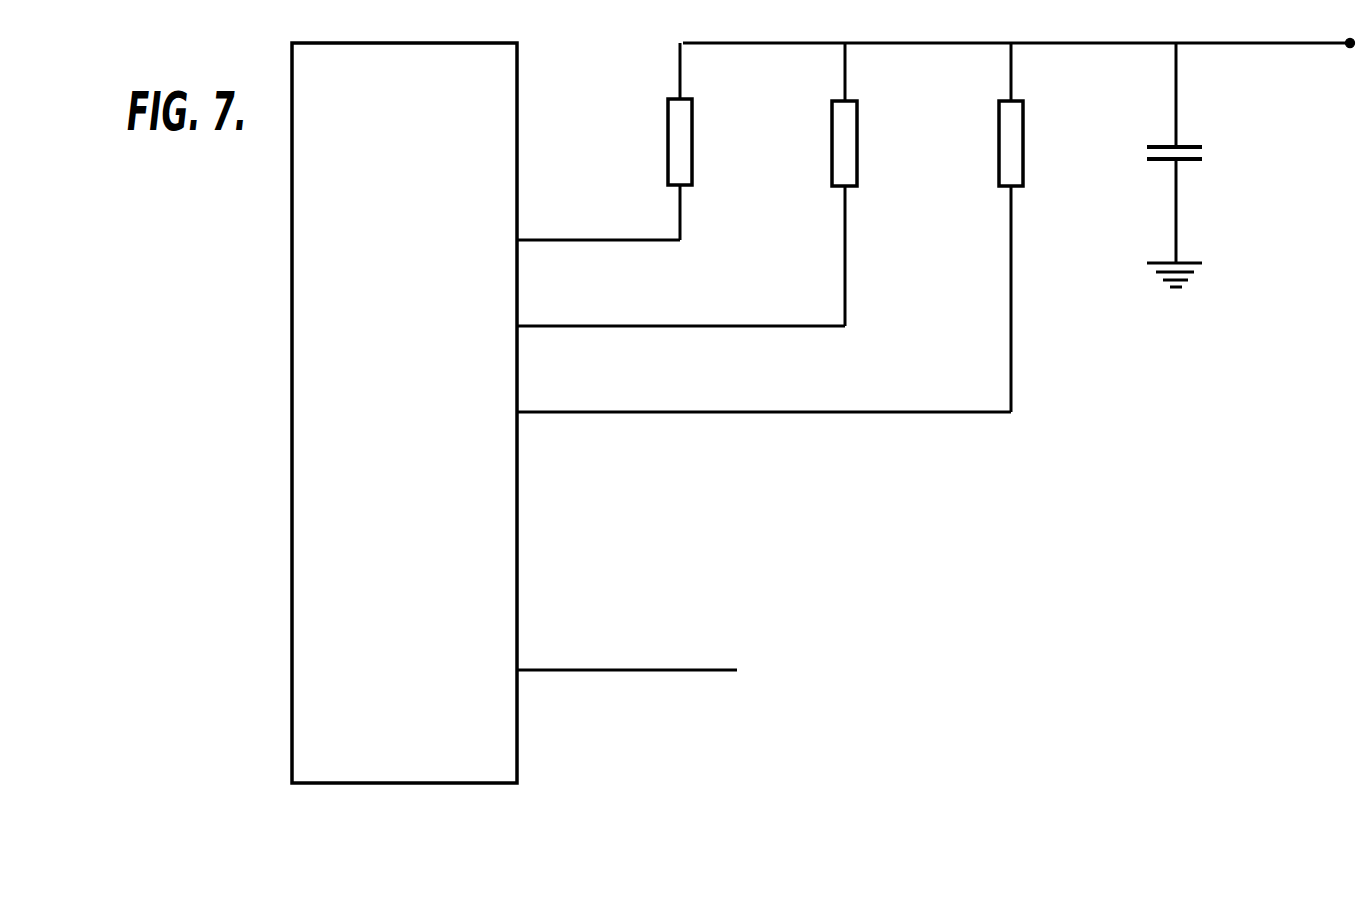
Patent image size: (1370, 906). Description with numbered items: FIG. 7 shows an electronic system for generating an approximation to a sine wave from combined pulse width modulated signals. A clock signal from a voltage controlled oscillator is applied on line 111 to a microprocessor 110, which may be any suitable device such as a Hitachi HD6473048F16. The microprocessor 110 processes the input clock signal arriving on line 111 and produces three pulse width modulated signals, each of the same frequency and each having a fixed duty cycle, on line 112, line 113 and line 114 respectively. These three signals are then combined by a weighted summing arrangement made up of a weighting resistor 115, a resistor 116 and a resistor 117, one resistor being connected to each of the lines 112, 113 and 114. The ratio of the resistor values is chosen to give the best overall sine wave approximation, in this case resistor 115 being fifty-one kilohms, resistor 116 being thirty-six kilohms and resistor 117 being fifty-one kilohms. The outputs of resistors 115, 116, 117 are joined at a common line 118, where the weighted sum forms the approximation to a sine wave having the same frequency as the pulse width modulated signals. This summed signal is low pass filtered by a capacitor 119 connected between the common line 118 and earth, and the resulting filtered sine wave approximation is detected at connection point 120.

The microprocessor 110 is at (428, 162).
The line 111 is at (563, 670).
The line 112 is at (565, 412).
The line 113 is at (566, 326).
The line 114 is at (565, 240).
The resistor 115 is at (1014, 143).
The resistor 116 is at (848, 143).
The resistor 117 is at (683, 143).
The common line 118 is at (1085, 44).
The capacitor 119 is at (1192, 162).
The connection point 120 is at (1348, 48).